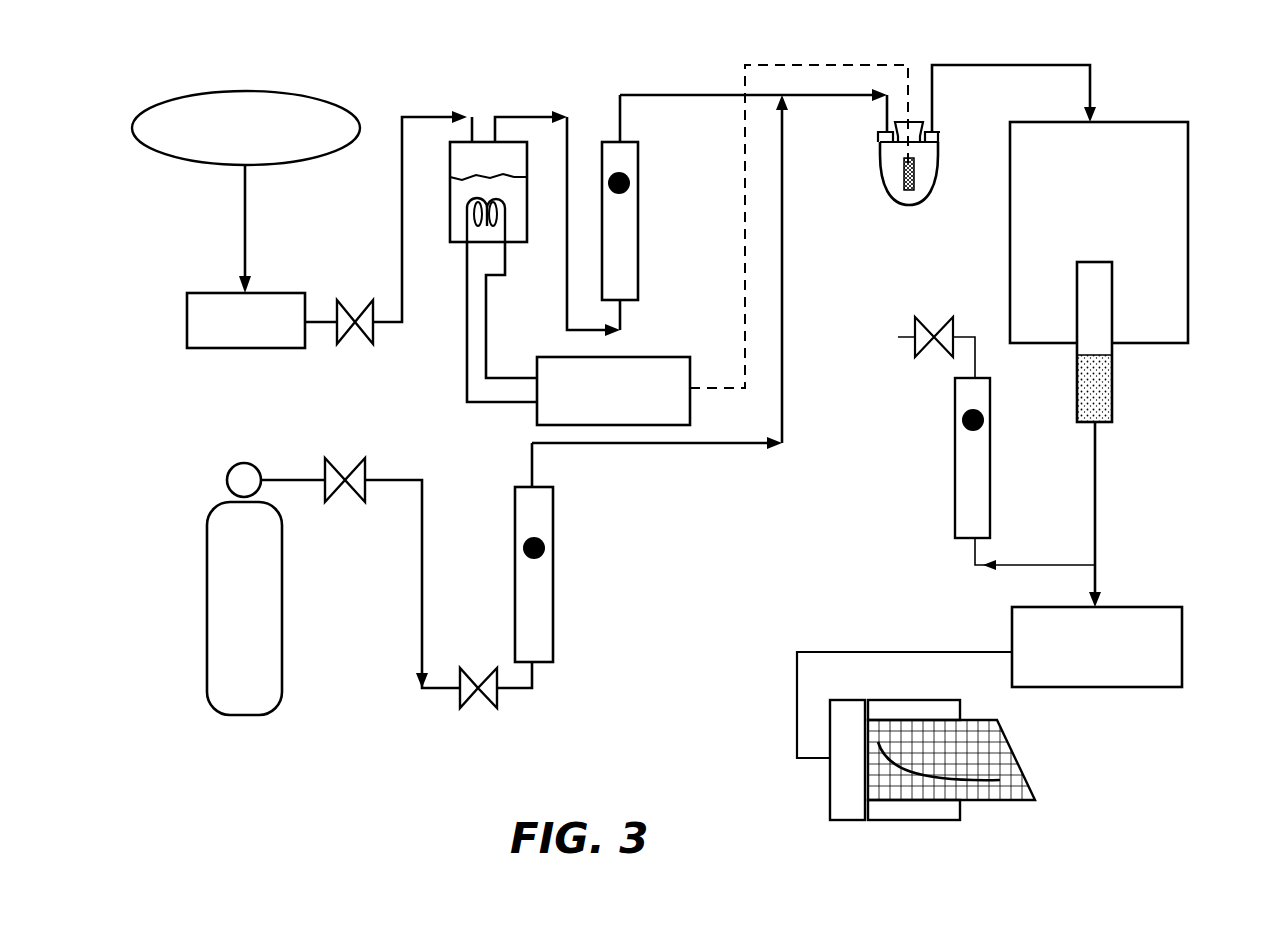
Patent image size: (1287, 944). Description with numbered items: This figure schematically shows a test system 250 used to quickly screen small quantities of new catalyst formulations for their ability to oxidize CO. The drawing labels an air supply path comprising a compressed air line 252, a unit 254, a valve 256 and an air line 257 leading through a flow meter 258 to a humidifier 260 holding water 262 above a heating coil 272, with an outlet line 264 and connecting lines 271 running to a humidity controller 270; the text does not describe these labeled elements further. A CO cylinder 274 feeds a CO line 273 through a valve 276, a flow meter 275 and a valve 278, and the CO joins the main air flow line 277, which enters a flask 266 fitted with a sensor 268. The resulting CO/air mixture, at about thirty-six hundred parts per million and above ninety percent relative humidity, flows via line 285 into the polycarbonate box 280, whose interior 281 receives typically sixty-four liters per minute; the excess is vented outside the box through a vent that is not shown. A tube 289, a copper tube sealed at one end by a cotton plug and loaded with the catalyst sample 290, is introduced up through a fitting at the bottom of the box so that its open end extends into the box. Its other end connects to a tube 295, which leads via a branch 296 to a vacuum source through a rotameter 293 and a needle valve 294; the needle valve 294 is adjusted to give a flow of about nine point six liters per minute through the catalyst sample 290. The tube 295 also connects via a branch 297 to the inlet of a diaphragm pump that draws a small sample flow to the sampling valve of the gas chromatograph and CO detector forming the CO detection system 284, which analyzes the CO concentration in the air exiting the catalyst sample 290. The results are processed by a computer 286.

The test system 250 is at (336, 64).
The compressed air line 252 is at (244, 228).
The air filter/dryer unit 254 is at (205, 350).
The valve 256 is at (355, 297).
The air line 257 is at (527, 116).
The flow meter 258 is at (628, 228).
The humidifier 260 is at (489, 150).
The water 262 is at (455, 182).
The humidifier outlet line 264 is at (518, 243).
The mixing flask 266 is at (889, 200).
The humidity sensor 268 is at (916, 180).
The humidity controller 270 is at (674, 356).
The controller connection lines 271 is at (485, 372).
The heating coil 272 is at (466, 212).
The CO line 273 is at (672, 446).
The CO cylinder 274 is at (218, 627).
The CO flow meter 275 is at (555, 607).
The CO cylinder valve 276 is at (348, 503).
The main air flow line 277 is at (836, 97).
The CO control valve 278 is at (478, 710).
The polycarbonate box 280 is at (1190, 146).
The box interior chamber 281 is at (1170, 208).
The CO detection system 284 is at (1184, 650).
The line 285 is at (968, 68).
The computer 286 is at (838, 797).
The tube 289 is at (1100, 305).
The catalyst sample 290 is at (1105, 395).
The rotameter 293 is at (968, 488).
The needle valve 294 is at (935, 316).
The tube 295 is at (1097, 465).
The branch 296 is at (1045, 563).
The branch 297 is at (1098, 578).